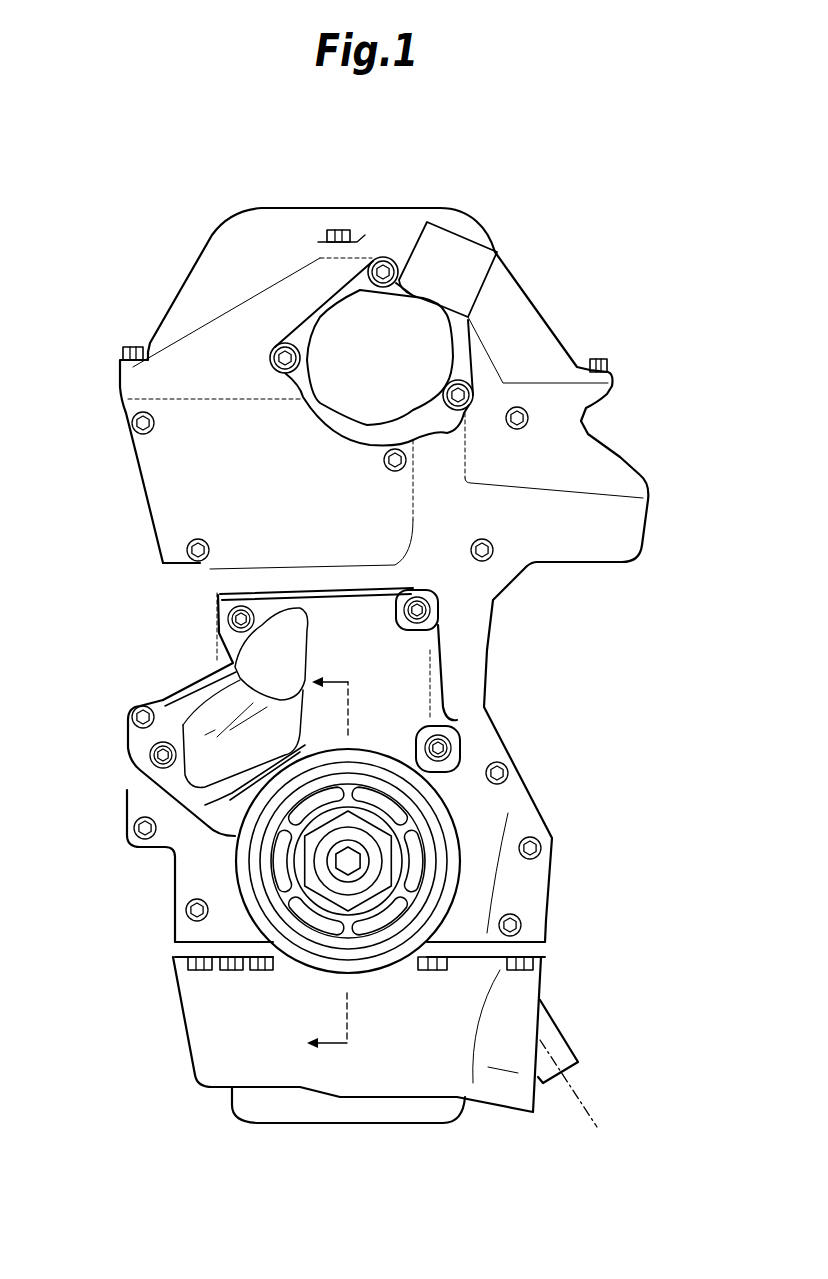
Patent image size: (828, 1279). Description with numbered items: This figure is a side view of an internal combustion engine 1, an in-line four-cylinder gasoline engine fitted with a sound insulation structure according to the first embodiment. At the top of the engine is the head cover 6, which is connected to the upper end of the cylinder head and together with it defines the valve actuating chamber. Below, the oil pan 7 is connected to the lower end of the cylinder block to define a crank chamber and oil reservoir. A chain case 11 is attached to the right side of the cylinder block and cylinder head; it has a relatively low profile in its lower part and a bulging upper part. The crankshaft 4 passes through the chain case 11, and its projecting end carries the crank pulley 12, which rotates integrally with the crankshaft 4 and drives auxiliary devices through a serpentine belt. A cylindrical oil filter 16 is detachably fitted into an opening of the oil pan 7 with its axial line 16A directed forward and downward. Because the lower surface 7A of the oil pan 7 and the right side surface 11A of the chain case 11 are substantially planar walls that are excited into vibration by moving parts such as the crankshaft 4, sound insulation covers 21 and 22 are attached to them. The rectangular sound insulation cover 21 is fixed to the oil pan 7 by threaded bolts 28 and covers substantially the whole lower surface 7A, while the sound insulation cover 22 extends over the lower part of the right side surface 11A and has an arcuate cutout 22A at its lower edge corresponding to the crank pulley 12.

The internal combustion engine 1 is at (556, 190).
The crankshaft 4 is at (352, 860).
The head cover 6 is at (286, 207).
The oil pan 7 is at (200, 1027).
The lower surface 7A is at (273, 1092).
The chain case 11 is at (545, 562).
The right side surface 11A is at (470, 670).
The crank pulley 12 is at (242, 866).
The oil filter 16 is at (552, 1033).
The axial line 16A is at (587, 1113).
The sound insulation cover 21 is at (363, 1110).
The sound insulation cover 22 is at (253, 667).
The arcuate cutout 22A is at (195, 793).
The threaded bolts 28 is at (236, 607).